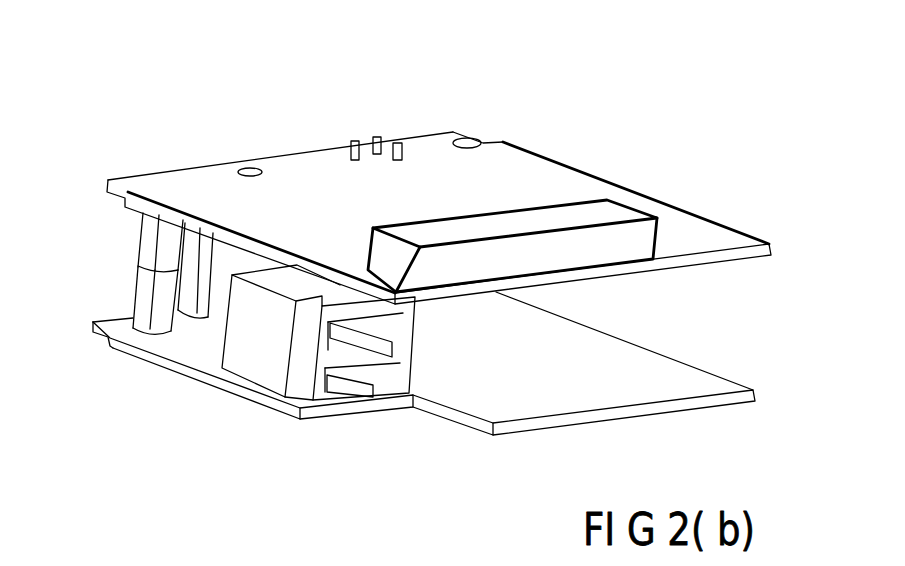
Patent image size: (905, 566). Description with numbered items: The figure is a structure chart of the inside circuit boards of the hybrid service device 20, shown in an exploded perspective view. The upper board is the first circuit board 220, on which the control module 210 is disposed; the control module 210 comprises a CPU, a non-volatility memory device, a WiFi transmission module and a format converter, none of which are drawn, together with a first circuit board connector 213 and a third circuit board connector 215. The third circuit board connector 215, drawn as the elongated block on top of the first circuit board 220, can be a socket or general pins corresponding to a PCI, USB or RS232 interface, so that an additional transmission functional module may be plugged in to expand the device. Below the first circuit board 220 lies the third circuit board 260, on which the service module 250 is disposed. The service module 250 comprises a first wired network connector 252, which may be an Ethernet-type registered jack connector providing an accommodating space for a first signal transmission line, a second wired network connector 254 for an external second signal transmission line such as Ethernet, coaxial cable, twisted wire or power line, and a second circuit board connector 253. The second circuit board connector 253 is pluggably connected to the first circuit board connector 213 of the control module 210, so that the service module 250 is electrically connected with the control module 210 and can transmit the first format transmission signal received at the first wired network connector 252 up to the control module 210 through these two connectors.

The hybrid service device 20 is at (647, 80).
The control module 210 is at (308, 128).
The first circuit board 220 is at (188, 166).
The third circuit board connector 215 is at (655, 218).
The first circuit board connector 213 is at (137, 236).
The second circuit board connector 253 is at (137, 290).
The service module 250 is at (733, 342).
The second wired network connector 254 is at (206, 293).
The first wired network connector 252 is at (340, 387).
The third circuit board 260 is at (538, 424).